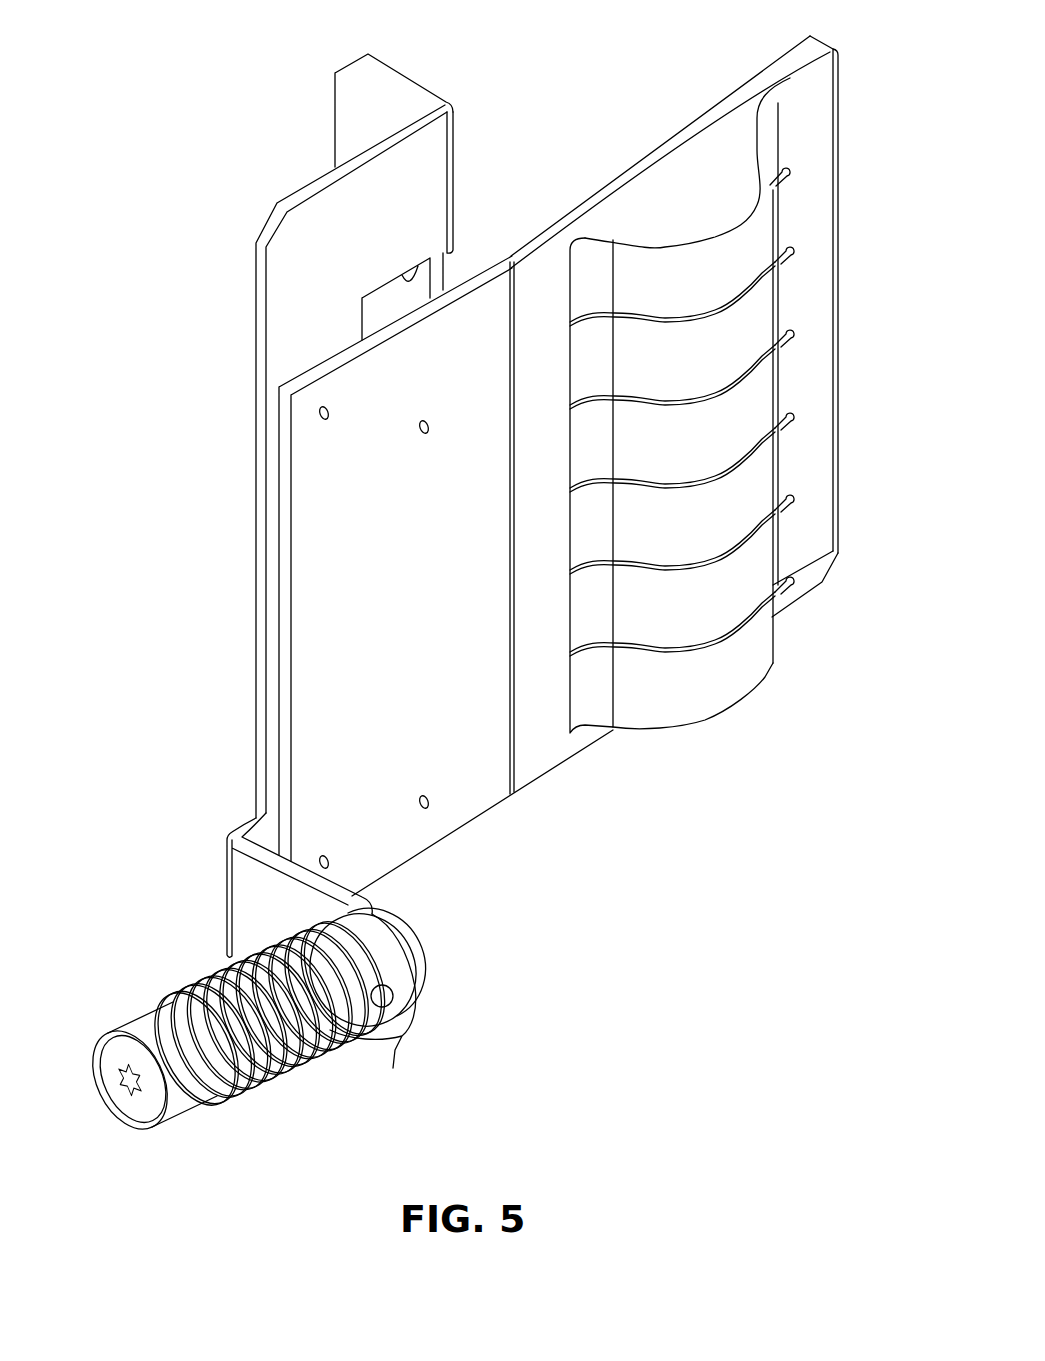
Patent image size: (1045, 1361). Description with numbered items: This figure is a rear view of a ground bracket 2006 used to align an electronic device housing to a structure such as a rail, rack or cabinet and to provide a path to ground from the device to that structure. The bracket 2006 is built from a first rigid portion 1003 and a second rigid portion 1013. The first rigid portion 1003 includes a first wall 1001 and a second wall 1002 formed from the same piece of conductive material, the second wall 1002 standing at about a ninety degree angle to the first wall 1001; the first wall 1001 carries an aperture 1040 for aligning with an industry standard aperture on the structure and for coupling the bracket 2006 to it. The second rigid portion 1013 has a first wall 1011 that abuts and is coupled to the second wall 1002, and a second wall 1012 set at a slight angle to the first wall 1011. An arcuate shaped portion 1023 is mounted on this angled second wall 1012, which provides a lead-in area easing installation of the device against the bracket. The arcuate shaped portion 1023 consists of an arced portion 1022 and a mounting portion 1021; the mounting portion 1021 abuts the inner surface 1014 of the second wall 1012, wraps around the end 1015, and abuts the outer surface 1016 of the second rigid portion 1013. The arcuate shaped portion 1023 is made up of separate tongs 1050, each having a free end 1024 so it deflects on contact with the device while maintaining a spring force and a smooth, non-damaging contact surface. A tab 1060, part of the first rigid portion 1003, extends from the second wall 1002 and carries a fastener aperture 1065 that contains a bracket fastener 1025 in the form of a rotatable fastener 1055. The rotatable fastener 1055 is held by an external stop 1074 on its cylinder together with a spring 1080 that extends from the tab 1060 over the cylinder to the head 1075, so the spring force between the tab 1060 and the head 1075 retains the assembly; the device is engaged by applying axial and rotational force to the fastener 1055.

The ground bracket 2006 is at (476, 72).
The first wall 1001 is at (343, 112).
The second wall 1002 is at (265, 323).
The first rigid portion 1003 is at (462, 143).
The first wall of the second rigid portion 1011 is at (450, 287).
The second wall of the second rigid portion 1012 is at (752, 86).
The second rigid portion 1013 is at (660, 140).
The inner surface 1014 is at (748, 164).
The end 1015 is at (820, 38).
The outer surface 1016 is at (787, 55).
The mounting portion 1021 is at (820, 120).
The arced portion 1022 is at (714, 234).
The arcuate shaped portion 1023 is at (849, 506).
The free end 1024 is at (576, 305).
The bracket fastener 1025 is at (230, 1041).
The aperture 1040 is at (400, 281).
The tongs 1050 is at (762, 230).
The rotatable fastener 1055 is at (118, 1108).
The tab 1060 is at (243, 880).
The fastener aperture 1065 is at (395, 1050).
The external stop 1074 is at (372, 912).
The head 1075 is at (183, 1110).
The spring 1080 is at (272, 1068).